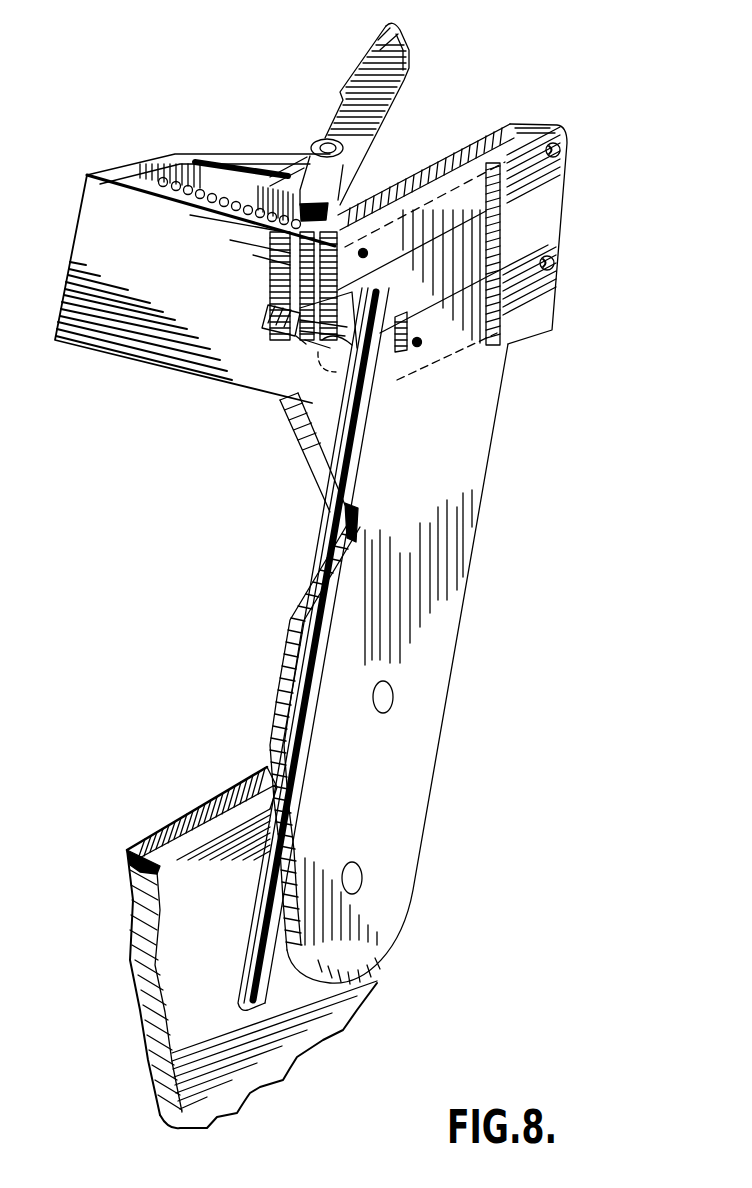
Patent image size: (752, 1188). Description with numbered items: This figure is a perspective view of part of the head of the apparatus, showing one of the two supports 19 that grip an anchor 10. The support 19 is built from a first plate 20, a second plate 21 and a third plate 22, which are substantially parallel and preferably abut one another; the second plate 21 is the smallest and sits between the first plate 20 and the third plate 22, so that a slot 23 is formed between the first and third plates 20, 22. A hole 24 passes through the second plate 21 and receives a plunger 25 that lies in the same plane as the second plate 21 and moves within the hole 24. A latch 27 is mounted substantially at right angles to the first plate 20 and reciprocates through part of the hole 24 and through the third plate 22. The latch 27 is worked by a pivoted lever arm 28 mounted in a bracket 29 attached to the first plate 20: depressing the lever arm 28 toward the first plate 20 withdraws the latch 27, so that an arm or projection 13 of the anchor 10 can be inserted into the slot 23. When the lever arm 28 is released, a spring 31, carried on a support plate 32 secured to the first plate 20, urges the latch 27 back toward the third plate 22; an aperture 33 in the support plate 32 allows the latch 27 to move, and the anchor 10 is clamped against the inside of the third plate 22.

The anchor 10 is at (312, 581).
The projection 13 is at (300, 300).
The support 19 is at (428, 644).
The first plate 20 is at (493, 130).
The second plate 21 is at (528, 122).
The third plate 22 is at (553, 170).
The slot 23 is at (318, 352).
The hole 24 is at (355, 357).
The plunger 25 is at (407, 290).
The latch 27 is at (330, 358).
The lever arm 28 is at (377, 97).
The bracket 29 is at (270, 166).
The spring 31 is at (168, 170).
The support plate 32 is at (161, 258).
The aperture 33 is at (295, 340).